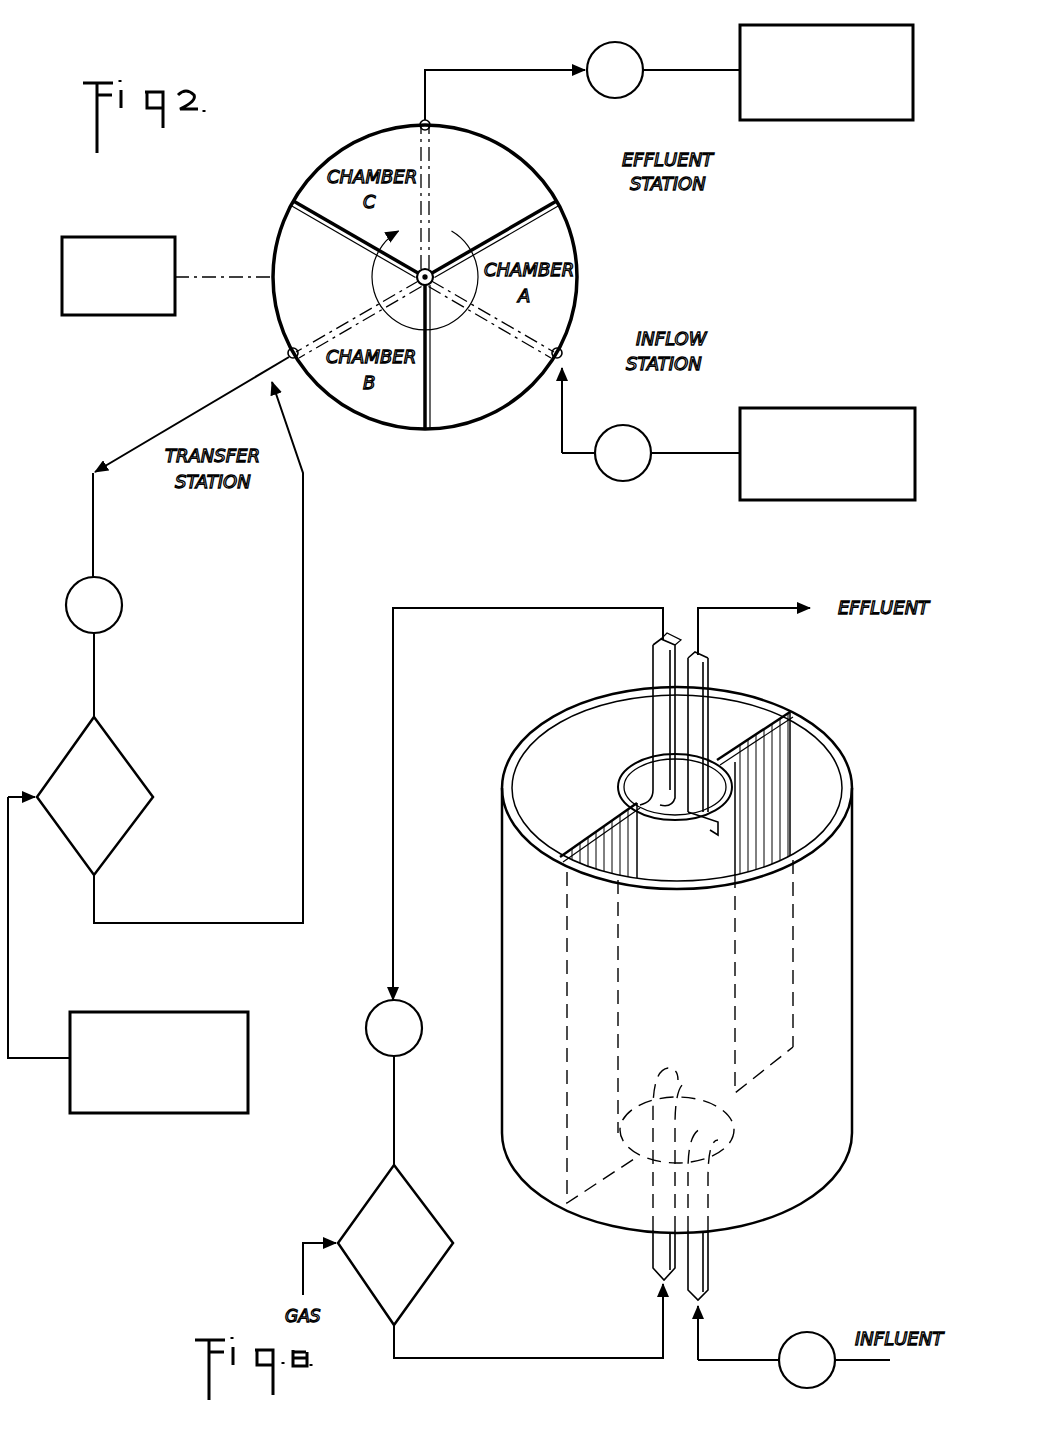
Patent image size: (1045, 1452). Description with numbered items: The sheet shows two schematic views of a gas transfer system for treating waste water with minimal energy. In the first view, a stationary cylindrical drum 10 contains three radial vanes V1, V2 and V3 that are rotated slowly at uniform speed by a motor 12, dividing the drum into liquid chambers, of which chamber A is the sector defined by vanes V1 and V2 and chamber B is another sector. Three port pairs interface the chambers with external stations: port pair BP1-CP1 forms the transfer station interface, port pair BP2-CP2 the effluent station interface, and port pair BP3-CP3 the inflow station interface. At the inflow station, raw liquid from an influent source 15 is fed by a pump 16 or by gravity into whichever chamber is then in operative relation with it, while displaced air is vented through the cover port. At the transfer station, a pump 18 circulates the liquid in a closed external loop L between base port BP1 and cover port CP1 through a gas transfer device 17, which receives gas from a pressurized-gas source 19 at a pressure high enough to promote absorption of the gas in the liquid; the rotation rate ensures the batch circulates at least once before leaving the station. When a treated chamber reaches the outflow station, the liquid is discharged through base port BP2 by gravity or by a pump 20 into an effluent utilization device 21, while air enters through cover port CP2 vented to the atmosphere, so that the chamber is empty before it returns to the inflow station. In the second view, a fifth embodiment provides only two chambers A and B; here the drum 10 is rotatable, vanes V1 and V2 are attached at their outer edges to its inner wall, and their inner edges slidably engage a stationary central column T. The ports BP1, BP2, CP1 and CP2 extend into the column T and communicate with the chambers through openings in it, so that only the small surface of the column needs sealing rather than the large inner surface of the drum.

In FIG. 2, the cylindrical drum 10 is at (531, 173).
In FIG. 6, the cylindrical drum 10 is at (849, 757).
In FIG. 2, the motor 12 is at (160, 237).
In FIG. 2, the influent source 15 is at (824, 408).
In FIG. 2, the pump 16 is at (630, 481).
In FIG. 6, the pump 16 is at (814, 1332).
In FIG. 2, the gas transfer device 17 is at (128, 760).
In FIG. 6, the gas transfer device 17 is at (437, 1222).
In FIG. 2, the pump 18 is at (120, 620).
In FIG. 6, the pump 18 is at (380, 1050).
In FIG. 2, the pressurized-gas source 19 is at (247, 1012).
In FIG. 2, the pump 20 is at (628, 46).
In FIG. 2, the effluent utilization device 21 is at (815, 120).
In FIG. 2, the closed external loop L is at (193, 408).
In FIG. 2, the radial vane V1 is at (512, 220).
In FIG. 6, the radial vane V1 is at (601, 826).
In FIG. 2, the radial vane V2 is at (432, 170).
In FIG. 6, the radial vane V2 is at (752, 742).
In FIG. 2, the radial vane V3 is at (350, 230).
In FIG. 2, the transfer station interface port pair BP1-CP1 is at (288, 353).
In FIG. 2, the effluent station interface port pair BP2-CP2 is at (430, 122).
In FIG. 2, the inflow station interface port pair BP3-CP3 is at (563, 358).
In FIG. 6, the cover port CP1 is at (652, 660).
In FIG. 6, the cover port CP2 is at (711, 673).
In FIG. 6, the base port BP1 is at (650, 1256).
In FIG. 6, the base port BP2 is at (712, 1256).
In FIG. 6, the liquid chamber A is at (588, 741).
In FIG. 6, the liquid chamber B is at (768, 806).
In FIG. 6, the stationary central column T is at (636, 770).